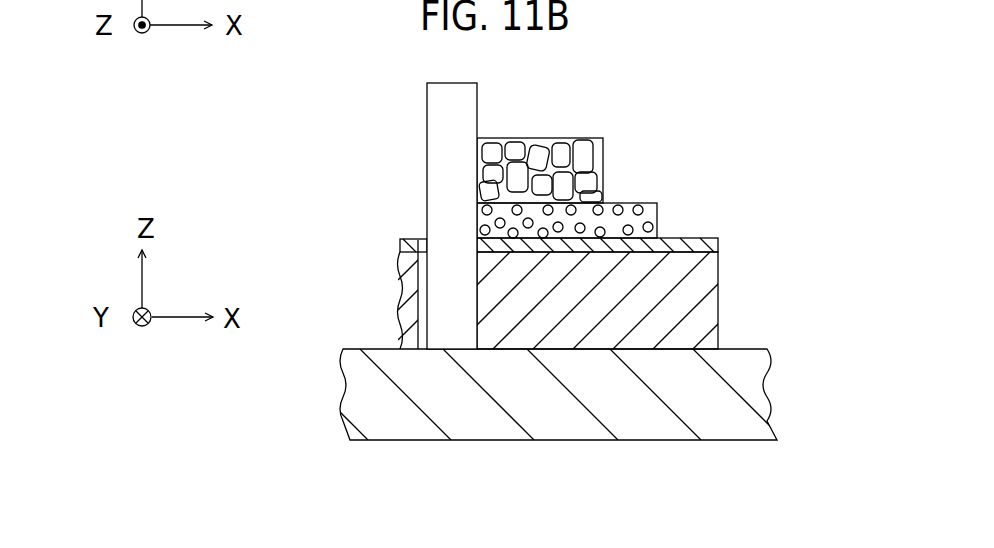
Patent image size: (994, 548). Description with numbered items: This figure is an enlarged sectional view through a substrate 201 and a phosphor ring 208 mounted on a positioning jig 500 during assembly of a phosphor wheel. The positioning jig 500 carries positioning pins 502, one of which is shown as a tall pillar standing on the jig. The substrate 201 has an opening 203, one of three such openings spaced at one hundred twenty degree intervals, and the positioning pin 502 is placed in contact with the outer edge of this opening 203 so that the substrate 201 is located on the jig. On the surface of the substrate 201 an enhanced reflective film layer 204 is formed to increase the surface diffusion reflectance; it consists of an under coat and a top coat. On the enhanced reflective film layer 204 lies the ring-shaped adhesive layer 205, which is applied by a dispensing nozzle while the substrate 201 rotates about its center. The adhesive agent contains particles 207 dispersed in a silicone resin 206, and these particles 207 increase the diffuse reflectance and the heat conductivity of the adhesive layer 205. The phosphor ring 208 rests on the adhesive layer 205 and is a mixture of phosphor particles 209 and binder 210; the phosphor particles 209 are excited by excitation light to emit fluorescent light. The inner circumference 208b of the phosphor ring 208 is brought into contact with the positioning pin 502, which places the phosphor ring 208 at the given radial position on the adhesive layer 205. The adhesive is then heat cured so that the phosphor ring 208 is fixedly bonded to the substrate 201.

The positioning jig 500 is at (475, 443).
The positioning pin 502 is at (437, 99).
The substrate 201 is at (718, 317).
The opening 203 is at (421, 243).
The enhanced reflective film layer 204 is at (718, 245).
The adhesive layer 205 is at (658, 217).
The silicone resin 206 is at (655, 202).
The particles 207 is at (625, 202).
The phosphor ring 208 is at (582, 130).
The inner circumference 208b is at (482, 138).
The phosphor particles 209 is at (537, 150).
The binder 210 is at (602, 165).